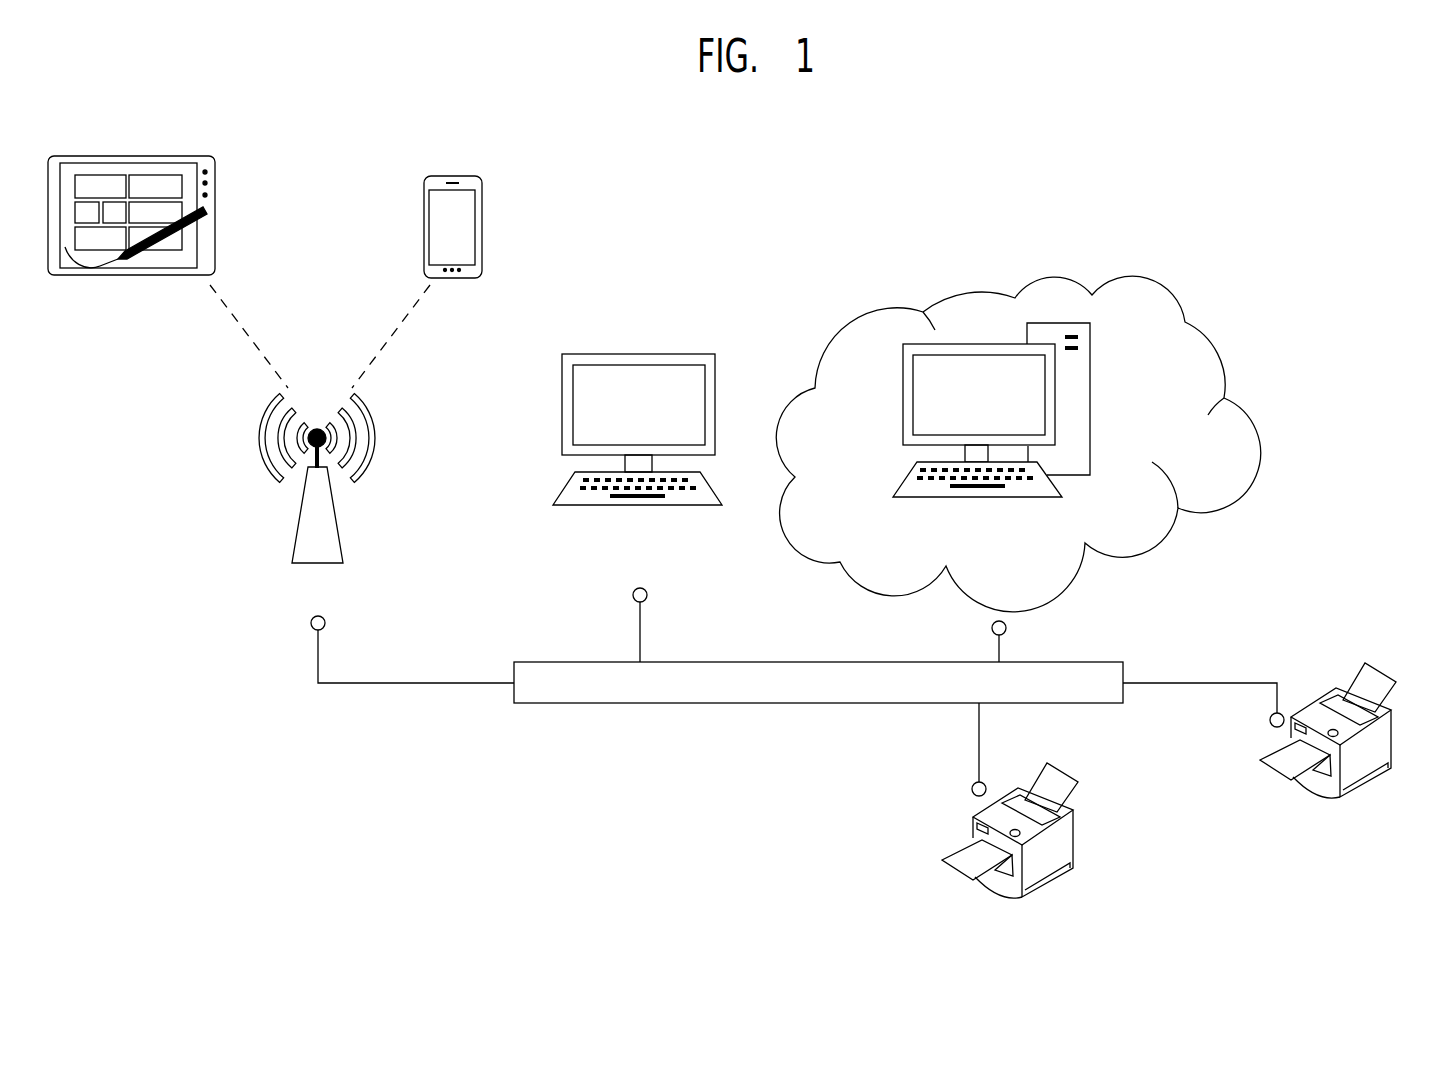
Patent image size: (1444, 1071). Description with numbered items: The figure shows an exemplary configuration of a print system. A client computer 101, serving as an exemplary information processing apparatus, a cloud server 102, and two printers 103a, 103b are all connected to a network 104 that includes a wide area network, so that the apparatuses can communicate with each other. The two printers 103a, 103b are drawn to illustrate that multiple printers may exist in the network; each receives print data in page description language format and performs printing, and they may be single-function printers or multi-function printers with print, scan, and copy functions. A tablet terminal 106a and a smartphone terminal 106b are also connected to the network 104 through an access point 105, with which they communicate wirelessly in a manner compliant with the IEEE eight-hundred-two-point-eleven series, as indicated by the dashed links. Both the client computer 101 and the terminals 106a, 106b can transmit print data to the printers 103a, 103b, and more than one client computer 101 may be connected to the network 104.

The client computer 101 is at (605, 507).
The cloud server 102 is at (987, 497).
The printer 103a is at (1040, 889).
The printer 103b is at (1362, 790).
The network 104 is at (783, 703).
The access point 105 is at (293, 533).
The tablet terminal 106a is at (135, 278).
The smartphone terminal 106b is at (483, 220).